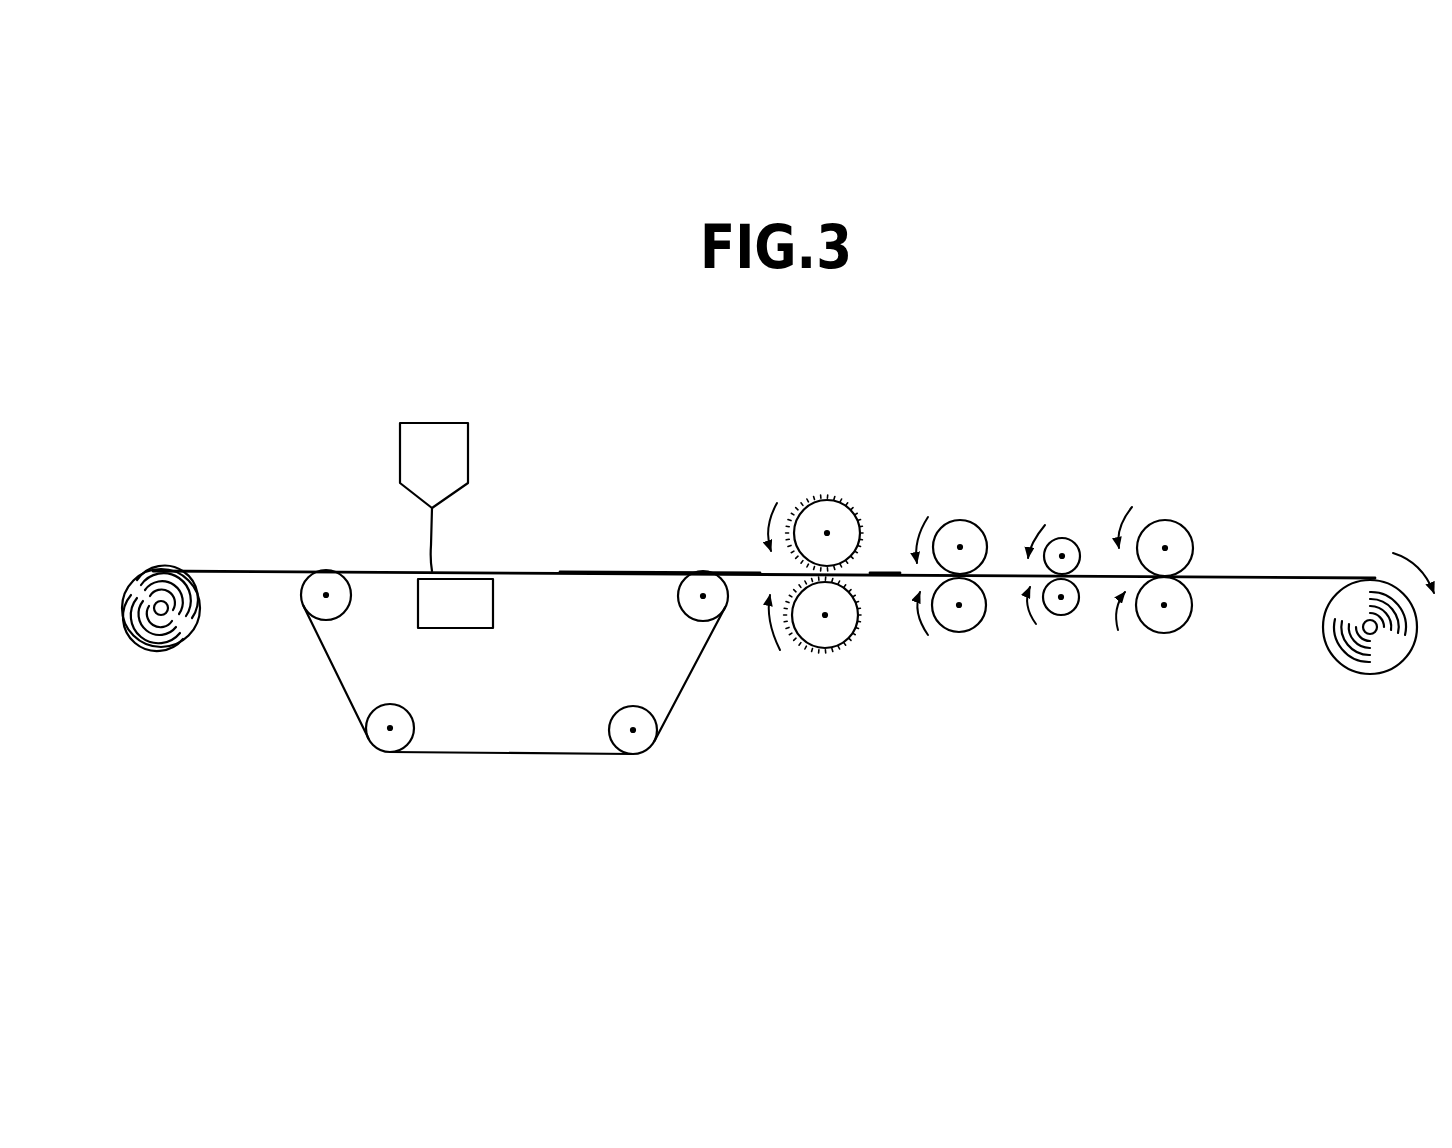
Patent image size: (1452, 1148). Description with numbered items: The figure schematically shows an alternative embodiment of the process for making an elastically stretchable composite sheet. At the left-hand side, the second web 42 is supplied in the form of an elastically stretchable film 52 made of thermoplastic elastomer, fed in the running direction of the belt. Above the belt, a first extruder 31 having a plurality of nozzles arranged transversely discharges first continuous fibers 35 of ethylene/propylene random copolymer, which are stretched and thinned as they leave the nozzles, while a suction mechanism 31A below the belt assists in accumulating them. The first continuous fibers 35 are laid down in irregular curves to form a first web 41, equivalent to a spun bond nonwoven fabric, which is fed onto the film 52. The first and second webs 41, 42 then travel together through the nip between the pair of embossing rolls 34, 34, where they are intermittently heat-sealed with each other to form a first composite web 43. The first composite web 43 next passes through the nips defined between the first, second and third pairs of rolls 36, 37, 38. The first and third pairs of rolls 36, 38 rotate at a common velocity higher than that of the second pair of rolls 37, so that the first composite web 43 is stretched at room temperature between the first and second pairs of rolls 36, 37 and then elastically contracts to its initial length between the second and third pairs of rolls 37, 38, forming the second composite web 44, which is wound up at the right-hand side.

The first extruder 31 is at (395, 418).
The suction mechanism 31A is at (491, 620).
The first continuous fibers 35 is at (432, 552).
The first web 41 is at (602, 566).
The second web 42 is at (277, 568).
The elastically stretchable film 52 is at (229, 568).
The embossing rolls 34 is at (836, 498).
The first composite web 43 is at (880, 579).
The first pair of rolls 36 is at (961, 520).
The second pair of rolls 37 is at (1066, 535).
The third pair of rolls 38 is at (1174, 521).
The second composite web 44 is at (1242, 582).